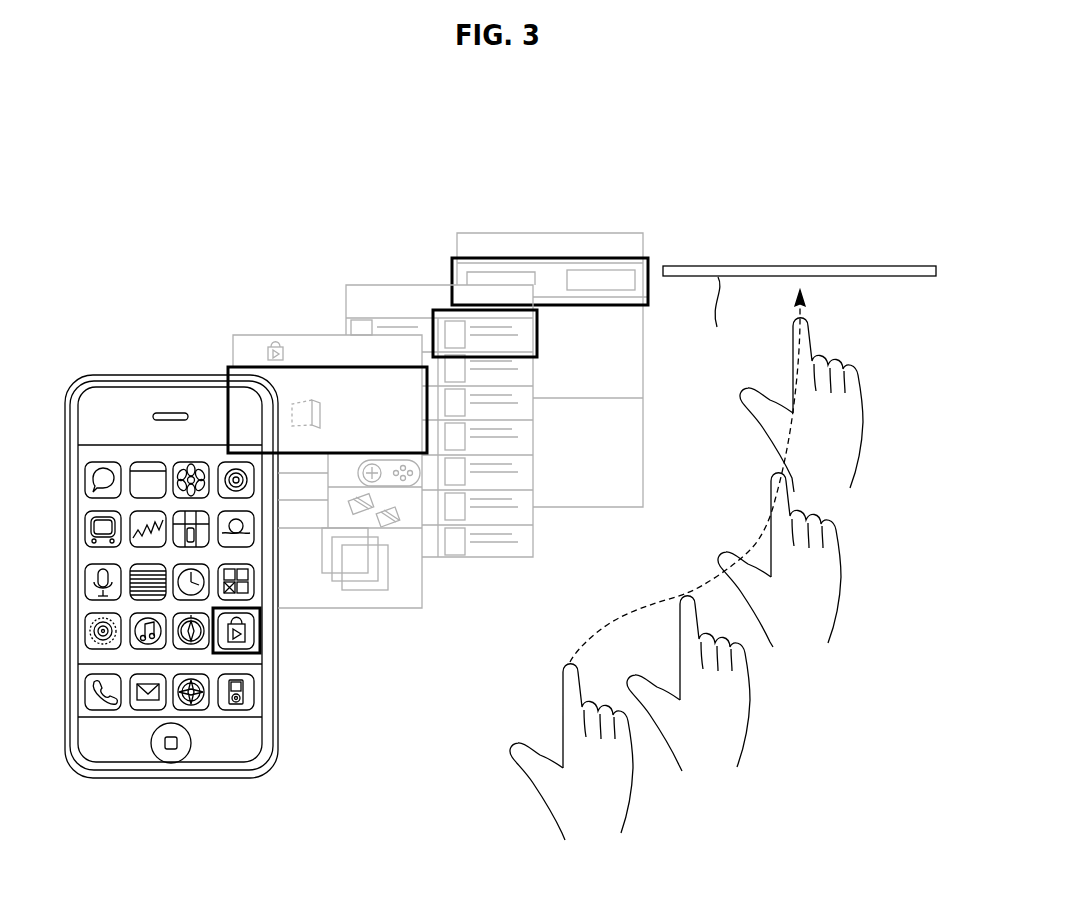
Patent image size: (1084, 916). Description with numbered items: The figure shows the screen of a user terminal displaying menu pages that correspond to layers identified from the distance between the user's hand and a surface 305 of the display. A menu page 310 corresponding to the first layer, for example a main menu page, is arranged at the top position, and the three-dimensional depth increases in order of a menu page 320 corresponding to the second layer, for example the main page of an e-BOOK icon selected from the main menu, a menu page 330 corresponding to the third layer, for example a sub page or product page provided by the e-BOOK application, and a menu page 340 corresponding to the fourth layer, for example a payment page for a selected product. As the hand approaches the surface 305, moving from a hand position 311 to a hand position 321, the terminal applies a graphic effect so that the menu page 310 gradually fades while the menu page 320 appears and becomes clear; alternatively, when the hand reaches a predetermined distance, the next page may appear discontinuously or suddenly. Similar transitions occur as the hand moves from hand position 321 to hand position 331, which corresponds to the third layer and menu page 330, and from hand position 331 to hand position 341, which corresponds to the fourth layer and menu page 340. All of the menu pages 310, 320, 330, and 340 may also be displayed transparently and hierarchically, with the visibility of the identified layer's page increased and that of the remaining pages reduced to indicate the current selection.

The surface of the display 305 is at (856, 266).
The menu page corresponding to the first layer 310 is at (167, 372).
The menu page corresponding to the second layer 320 is at (290, 335).
The menu page corresponding to the third layer 330 is at (400, 285).
The menu page corresponding to the fourth layer 340 is at (545, 233).
The hand position 311 is at (622, 799).
The hand position 321 is at (738, 697).
The hand position 331 is at (828, 575).
The hand position 341 is at (853, 422).